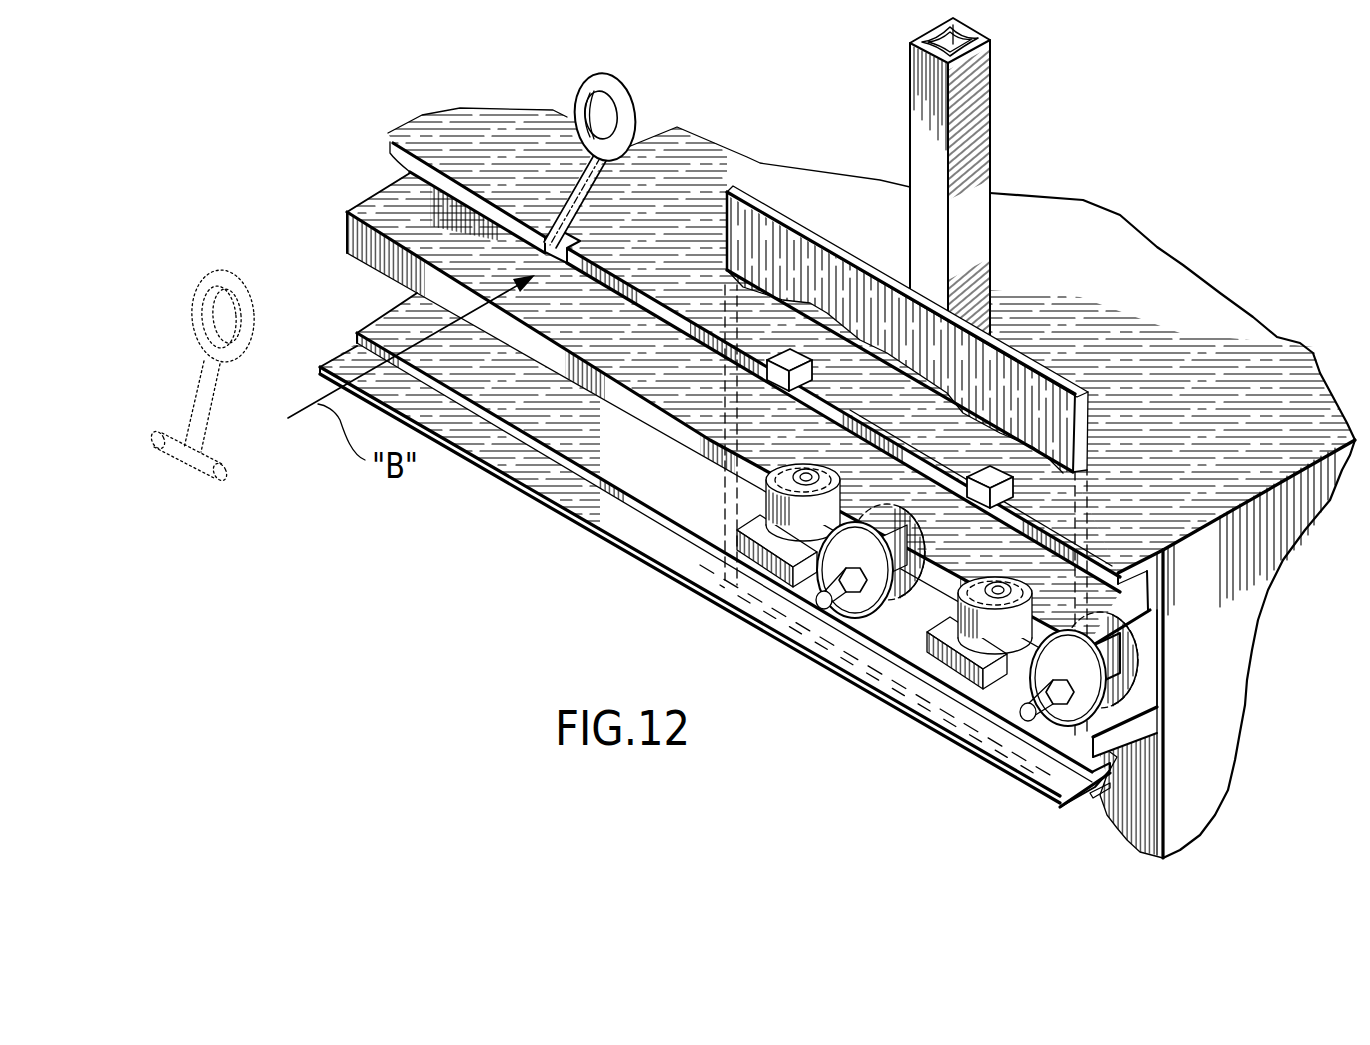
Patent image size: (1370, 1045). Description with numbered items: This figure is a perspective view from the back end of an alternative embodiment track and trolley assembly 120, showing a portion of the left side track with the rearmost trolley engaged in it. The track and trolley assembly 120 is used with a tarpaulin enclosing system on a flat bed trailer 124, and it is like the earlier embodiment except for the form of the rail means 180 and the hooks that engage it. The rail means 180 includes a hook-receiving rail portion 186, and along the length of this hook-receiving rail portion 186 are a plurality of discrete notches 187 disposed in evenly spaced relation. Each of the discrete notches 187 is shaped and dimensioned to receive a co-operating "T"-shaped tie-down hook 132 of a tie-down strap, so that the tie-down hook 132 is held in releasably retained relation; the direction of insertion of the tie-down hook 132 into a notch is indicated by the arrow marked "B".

The track and trolley assembly 120 is at (500, 544).
The flat bed trailer 124 is at (1232, 648).
The tie-down hook 132 is at (628, 108).
The rail means 180 is at (684, 282).
The hook-receiving rail portion 186 is at (633, 252).
The discrete notch 187 is at (557, 242).